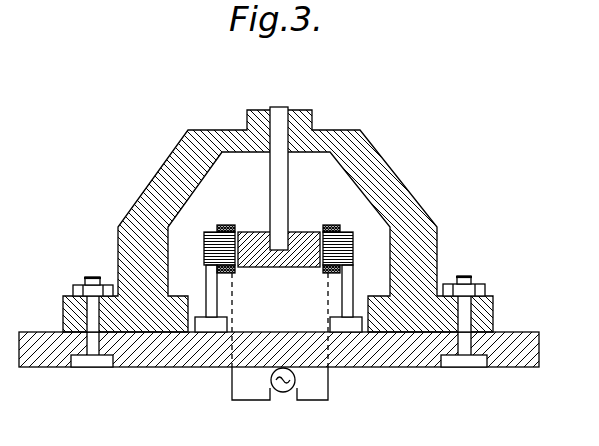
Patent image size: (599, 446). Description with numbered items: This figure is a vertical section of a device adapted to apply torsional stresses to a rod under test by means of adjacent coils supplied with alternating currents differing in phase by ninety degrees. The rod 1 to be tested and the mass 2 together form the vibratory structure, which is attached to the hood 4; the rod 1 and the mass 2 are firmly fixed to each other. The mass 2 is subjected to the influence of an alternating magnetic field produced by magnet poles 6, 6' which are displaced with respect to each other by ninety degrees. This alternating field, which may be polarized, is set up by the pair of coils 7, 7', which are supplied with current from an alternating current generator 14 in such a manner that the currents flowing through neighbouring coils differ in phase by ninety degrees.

The rod 1 is at (283, 202).
The mass 2 is at (305, 238).
The hood 4 is at (388, 180).
The magnet pole 6 is at (350, 248).
The magnet pole 6' is at (229, 229).
The coil 7 is at (329, 249).
The coil 7' is at (227, 246).
The alternating current generator 14 is at (283, 393).